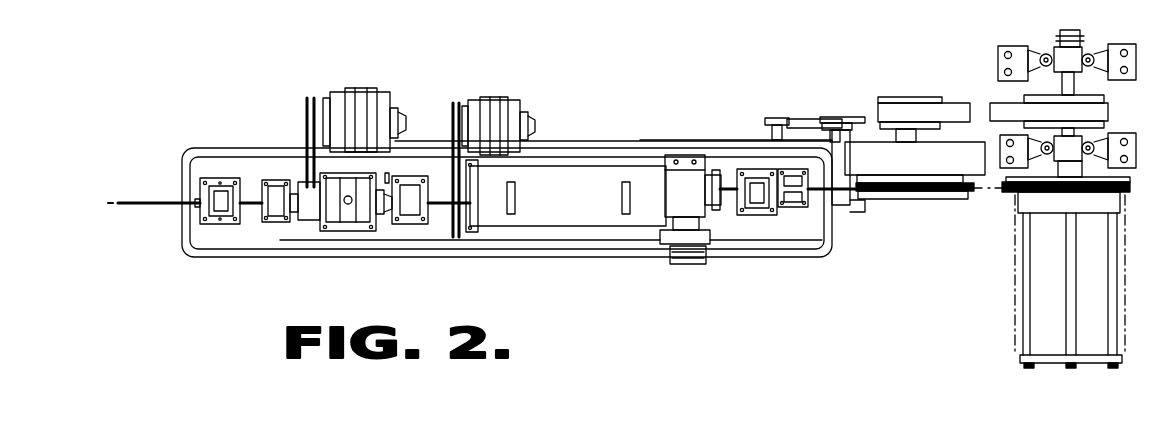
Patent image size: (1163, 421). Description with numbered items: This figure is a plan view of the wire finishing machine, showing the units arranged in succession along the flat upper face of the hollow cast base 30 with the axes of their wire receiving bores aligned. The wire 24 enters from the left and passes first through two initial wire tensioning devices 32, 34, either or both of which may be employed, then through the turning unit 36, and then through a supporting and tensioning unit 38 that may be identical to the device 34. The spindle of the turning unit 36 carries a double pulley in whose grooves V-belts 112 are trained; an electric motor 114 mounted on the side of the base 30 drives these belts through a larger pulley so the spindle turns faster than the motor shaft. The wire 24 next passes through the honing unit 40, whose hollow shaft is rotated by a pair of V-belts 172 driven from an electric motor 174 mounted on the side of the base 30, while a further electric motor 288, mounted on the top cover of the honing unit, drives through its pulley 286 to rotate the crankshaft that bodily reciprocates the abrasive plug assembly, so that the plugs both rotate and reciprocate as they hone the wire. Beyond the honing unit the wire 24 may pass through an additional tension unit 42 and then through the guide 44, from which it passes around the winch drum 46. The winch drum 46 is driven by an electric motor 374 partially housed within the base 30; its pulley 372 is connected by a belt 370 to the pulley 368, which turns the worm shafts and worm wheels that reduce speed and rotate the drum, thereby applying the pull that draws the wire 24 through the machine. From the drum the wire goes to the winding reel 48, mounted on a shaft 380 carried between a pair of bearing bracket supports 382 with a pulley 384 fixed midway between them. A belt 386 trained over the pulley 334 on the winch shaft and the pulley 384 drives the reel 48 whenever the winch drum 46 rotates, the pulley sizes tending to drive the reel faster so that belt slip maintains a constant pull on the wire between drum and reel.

The wire 24 is at (132, 202).
The base 30 is at (280, 258).
The wire tensioning device 32 is at (221, 230).
The wire tensioning device 34 is at (280, 226).
The turning unit 36 is at (357, 233).
The supporting and tensioning unit 38 is at (414, 227).
The honing unit 40 is at (582, 207).
The tension unit 42 is at (757, 218).
The guide 44 is at (797, 211).
The winch drum 46 is at (898, 200).
The winding reel 48 is at (1018, 212).
The V-belt 112 is at (300, 122).
The electric motor 114 is at (360, 92).
The V-belt 172 is at (452, 115).
The electric motor 174 is at (492, 100).
The pulley 286 is at (674, 265).
The electric motor 288 is at (698, 202).
The pulley 334 is at (904, 97).
The pulley 368 is at (832, 118).
The belt 370 is at (802, 118).
The pulley 372 is at (772, 118).
The electric motor 374 is at (745, 140).
The shaft 380 is at (1060, 96).
The bearing bracket support 382 is at (1034, 52).
The pulley 384 is at (1064, 120).
The belt 386 is at (958, 103).